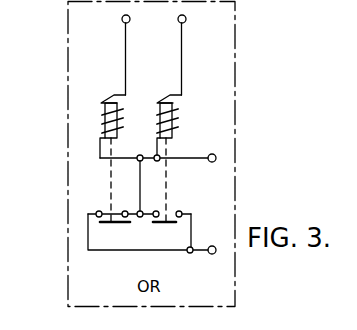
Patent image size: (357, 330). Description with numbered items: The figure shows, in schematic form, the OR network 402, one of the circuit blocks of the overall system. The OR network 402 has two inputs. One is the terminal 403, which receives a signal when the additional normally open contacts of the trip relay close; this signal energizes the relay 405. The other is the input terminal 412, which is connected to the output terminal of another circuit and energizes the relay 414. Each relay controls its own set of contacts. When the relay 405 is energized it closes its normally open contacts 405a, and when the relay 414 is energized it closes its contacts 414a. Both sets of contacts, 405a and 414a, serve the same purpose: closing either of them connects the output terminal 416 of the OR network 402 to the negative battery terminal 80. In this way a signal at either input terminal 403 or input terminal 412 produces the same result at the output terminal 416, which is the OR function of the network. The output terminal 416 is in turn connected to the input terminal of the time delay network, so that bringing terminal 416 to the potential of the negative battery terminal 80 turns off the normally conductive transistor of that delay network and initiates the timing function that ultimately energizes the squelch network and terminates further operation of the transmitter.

The OR network 402 is at (68, 25).
The terminal 403 is at (122, 19).
The input terminal 412 is at (186, 19).
The relay 405 is at (117, 94).
The relay 414 is at (173, 94).
The negative battery terminal 80 is at (214, 154).
The normally open contacts 405a is at (130, 222).
The contacts 414a is at (181, 194).
The output terminal 416 is at (214, 254).